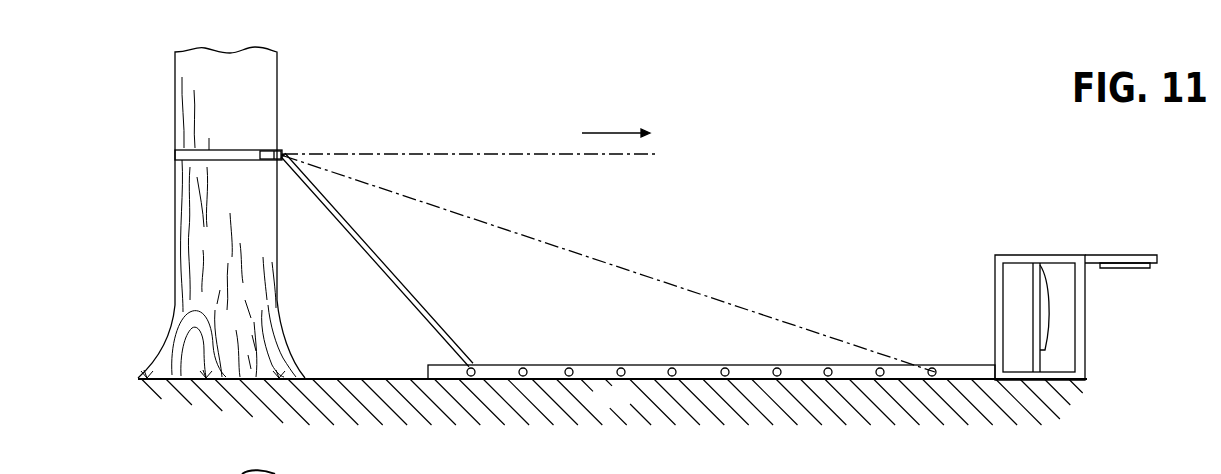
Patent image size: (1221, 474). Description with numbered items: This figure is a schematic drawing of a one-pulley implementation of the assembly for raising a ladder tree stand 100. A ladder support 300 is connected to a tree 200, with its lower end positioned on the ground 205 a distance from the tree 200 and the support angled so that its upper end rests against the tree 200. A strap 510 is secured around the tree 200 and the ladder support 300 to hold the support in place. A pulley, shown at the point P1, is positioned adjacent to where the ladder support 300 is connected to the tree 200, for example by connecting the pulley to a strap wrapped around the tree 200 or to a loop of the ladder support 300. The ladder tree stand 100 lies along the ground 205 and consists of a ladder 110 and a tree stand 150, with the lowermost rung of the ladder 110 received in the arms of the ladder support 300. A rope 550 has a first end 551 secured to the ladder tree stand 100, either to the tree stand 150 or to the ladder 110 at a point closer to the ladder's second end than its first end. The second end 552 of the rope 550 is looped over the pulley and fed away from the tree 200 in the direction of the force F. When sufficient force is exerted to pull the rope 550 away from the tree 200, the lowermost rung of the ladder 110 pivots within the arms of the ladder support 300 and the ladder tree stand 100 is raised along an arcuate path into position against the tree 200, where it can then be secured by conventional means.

The tree 200 is at (243, 102).
The strap 510 is at (200, 151).
The pivot point P1 is at (297, 143).
The ladder support 300 is at (351, 232).
The second end of the rope 552 is at (594, 156).
The rope 550 is at (663, 280).
The ladder 110 is at (745, 373).
The ground 205 is at (627, 408).
The first end of the rope 551 is at (967, 381).
The ladder tree stand 100 is at (961, 353).
The tree stand 150 is at (1127, 268).